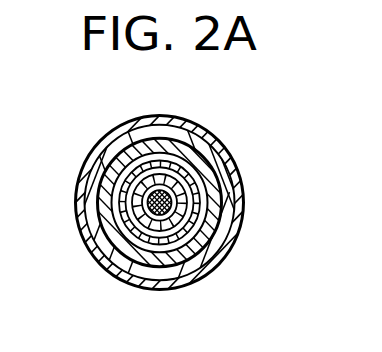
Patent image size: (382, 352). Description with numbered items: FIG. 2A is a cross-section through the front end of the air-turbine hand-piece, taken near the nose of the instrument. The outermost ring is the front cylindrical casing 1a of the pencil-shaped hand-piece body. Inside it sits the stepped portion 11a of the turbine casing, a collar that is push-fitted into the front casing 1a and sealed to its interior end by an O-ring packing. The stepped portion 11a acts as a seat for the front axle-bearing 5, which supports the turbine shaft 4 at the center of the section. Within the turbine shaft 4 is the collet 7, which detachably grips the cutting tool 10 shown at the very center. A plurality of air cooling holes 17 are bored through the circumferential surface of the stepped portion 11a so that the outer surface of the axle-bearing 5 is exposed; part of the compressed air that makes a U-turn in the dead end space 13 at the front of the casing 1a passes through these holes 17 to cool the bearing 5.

The front cylindrical casing 1a is at (178, 124).
The turbine shaft 4 is at (98, 264).
The axle-bearing 5 is at (102, 144).
The collet 7 is at (128, 277).
The cutting tool 10 is at (212, 226).
The stepped portion 11a is at (224, 162).
The dead end space 13 is at (197, 147).
The air cooling holes 17 is at (142, 118).